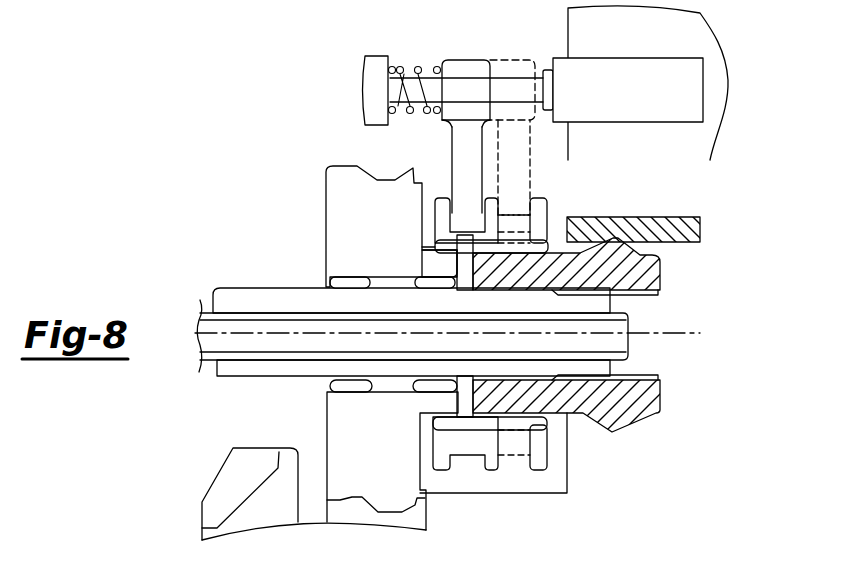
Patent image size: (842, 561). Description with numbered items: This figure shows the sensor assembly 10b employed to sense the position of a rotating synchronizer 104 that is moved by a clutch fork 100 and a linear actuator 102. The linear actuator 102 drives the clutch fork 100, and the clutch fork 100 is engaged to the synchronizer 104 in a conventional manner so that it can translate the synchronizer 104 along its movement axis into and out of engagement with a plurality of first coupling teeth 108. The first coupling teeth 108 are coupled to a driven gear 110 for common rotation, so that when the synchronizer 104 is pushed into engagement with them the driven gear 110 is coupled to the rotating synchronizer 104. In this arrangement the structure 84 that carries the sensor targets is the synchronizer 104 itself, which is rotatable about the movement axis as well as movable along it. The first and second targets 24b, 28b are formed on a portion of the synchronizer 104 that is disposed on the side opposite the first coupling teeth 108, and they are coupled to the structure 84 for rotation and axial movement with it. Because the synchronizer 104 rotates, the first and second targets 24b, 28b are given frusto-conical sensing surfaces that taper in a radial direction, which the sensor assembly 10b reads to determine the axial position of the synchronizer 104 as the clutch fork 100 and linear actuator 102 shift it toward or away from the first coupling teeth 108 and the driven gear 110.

The linear actuator 102 is at (667, 79).
The clutch fork 100 is at (462, 143).
The sensor assembly 10b is at (661, 213).
The driven gear 110 is at (345, 253).
The first coupling teeth 108 is at (437, 250).
The first target 24b is at (603, 432).
The second target 28b is at (628, 427).
The synchronizer 104 is at (527, 402).
The structure 84 is at (546, 454).